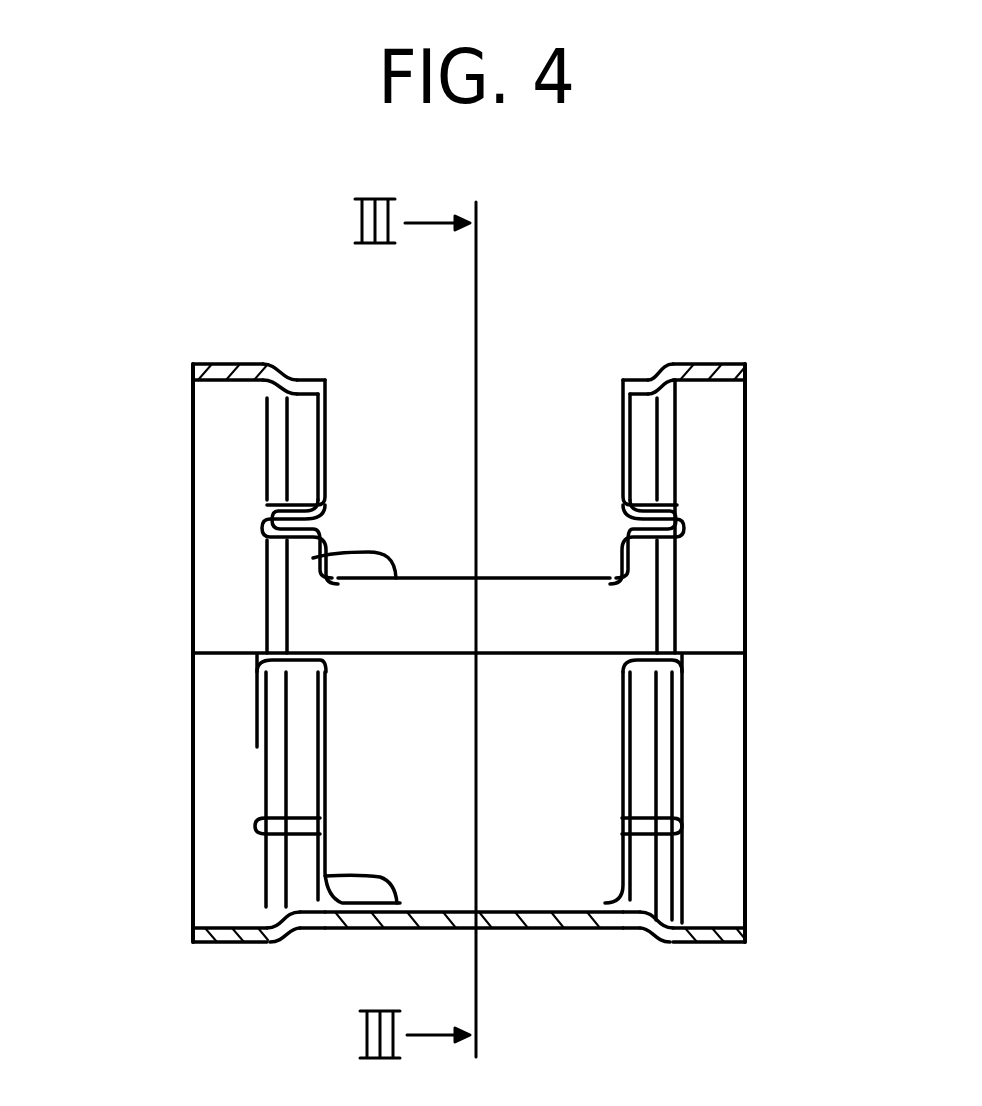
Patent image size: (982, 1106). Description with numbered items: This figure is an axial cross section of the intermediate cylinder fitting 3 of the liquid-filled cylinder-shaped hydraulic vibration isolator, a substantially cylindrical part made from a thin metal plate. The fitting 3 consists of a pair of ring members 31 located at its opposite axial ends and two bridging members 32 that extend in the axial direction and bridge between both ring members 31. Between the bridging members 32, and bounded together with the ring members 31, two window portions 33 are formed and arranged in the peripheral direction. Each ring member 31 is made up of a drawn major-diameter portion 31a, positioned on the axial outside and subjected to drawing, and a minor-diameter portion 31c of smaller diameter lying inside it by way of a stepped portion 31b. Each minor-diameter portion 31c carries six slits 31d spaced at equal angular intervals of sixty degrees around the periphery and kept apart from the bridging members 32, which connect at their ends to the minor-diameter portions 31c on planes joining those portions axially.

The intermediate cylinder fitting 3 is at (772, 385).
The ring member 31 is at (227, 462).
The drawn major-diameter portion 31a is at (218, 364).
The stepped portion 31b is at (272, 366).
The minor-diameter portion 31c is at (293, 370).
The slit 31d is at (310, 383).
The bridging member 32 is at (520, 603).
The window portion 33 is at (313, 558).